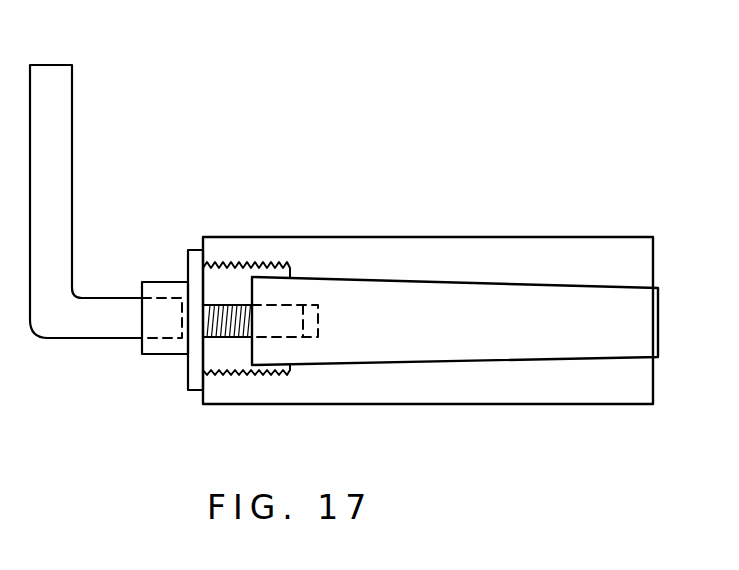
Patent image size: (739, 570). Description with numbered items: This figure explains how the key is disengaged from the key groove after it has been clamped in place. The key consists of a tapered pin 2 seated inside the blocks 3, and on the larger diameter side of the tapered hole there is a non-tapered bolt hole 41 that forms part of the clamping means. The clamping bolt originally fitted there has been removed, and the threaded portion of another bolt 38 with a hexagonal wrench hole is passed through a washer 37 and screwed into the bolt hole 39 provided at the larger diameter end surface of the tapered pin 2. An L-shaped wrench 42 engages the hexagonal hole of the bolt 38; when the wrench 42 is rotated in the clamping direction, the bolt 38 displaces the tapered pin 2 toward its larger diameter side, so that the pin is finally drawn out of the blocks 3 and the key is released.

The tapered pin 2 is at (435, 280).
The blocks 3 is at (517, 237).
The washer 37 is at (193, 250).
The bolt with a hexagonal wrench hole 38 is at (158, 282).
The bolt hole 39 is at (315, 305).
The bolt hole 41 is at (243, 262).
The wrench 42 is at (72, 128).